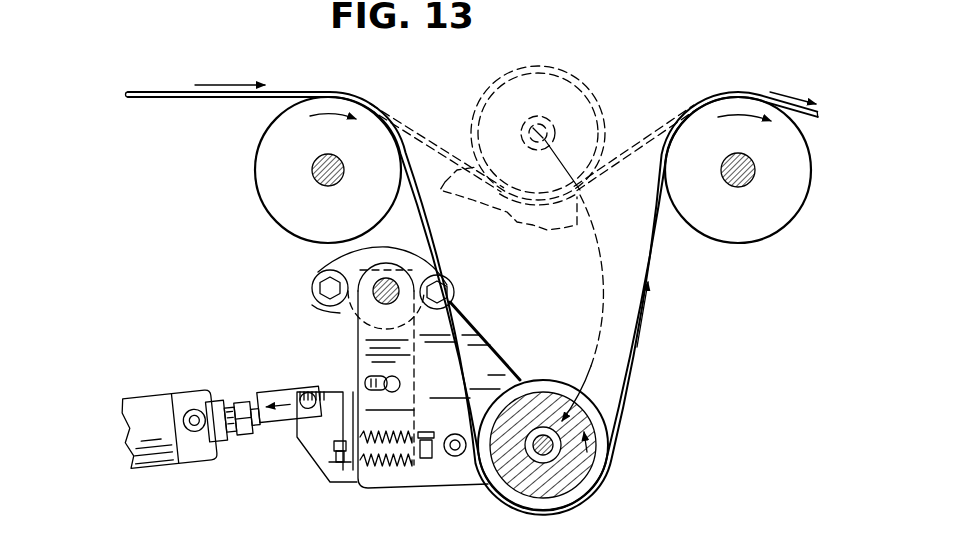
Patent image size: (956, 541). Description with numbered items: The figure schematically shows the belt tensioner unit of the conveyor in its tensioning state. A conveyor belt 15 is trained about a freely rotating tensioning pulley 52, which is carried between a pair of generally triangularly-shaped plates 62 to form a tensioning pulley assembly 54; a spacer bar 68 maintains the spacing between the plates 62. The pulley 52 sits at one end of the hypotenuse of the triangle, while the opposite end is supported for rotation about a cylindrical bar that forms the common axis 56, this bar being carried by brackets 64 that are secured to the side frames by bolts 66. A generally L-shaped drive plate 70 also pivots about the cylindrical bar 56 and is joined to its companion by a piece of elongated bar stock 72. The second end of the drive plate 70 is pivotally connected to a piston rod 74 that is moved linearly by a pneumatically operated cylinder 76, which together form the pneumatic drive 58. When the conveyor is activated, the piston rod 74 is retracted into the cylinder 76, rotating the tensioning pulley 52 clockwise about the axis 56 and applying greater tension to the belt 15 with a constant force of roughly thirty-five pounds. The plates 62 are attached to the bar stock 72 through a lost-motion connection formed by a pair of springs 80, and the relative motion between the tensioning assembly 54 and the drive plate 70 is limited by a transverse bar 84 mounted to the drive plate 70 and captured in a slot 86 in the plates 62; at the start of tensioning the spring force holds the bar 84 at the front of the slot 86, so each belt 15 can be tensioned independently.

The belt 15 is at (313, 97).
The tensioning pulley 52 is at (608, 127).
The tensioning pulley assembly 54 is at (221, 399).
The common axis 56 is at (386, 283).
The pneumatic drive 58 is at (166, 0).
The triangularly-shaped plate 62 is at (492, 350).
The bracket 64 is at (330, 308).
The bolt 66 is at (330, 283).
The spacer bar 68 is at (456, 456).
The drive plate 70 is at (310, 435).
The bar stock 72 is at (338, 455).
The piston rod 74 is at (245, 410).
The cylinder 76 is at (163, 424).
The spring 80 is at (392, 476).
The transverse bar 84 is at (402, 386).
The slot 86 is at (368, 385).